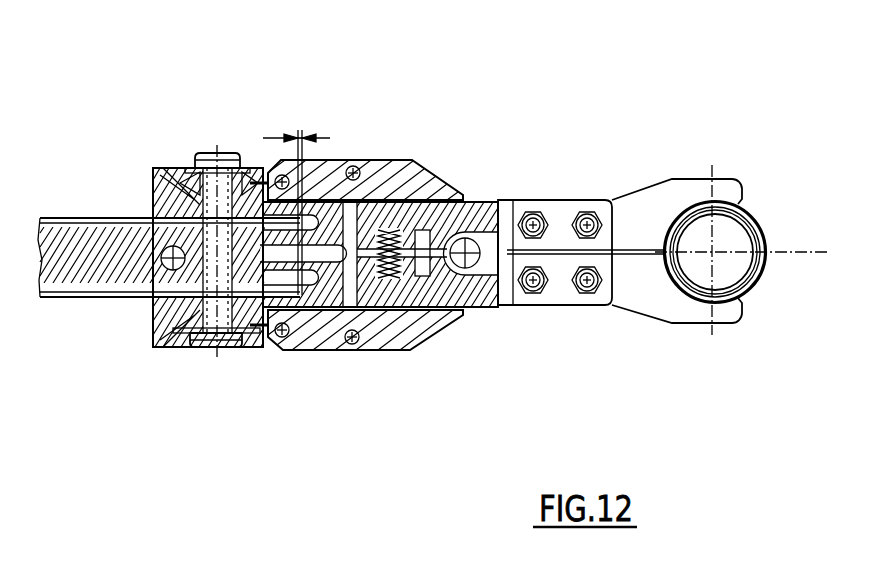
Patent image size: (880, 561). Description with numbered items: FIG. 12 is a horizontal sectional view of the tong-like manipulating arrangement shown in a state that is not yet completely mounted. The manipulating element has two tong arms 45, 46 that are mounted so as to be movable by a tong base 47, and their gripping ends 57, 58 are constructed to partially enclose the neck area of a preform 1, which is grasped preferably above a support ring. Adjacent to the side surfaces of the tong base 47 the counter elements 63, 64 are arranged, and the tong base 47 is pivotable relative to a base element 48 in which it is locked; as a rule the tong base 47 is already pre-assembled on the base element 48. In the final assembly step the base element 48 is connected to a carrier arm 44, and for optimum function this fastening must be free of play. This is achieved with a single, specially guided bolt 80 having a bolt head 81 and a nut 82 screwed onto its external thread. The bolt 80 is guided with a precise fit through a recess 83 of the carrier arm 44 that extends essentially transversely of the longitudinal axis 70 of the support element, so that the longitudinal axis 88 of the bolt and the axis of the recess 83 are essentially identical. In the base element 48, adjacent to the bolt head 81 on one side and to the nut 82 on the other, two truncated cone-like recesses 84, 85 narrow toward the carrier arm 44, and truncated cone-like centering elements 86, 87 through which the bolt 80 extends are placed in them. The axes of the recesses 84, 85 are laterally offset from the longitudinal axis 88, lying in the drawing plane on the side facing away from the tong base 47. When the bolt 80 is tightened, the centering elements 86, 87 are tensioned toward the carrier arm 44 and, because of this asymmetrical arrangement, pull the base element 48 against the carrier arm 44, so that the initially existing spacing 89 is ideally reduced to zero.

The preform 1 is at (766, 218).
The carrier arm 44 is at (85, 298).
The tong arm 45 is at (637, 296).
The tong arm 46 is at (628, 207).
The tong base 47 is at (503, 307).
The base element 48 is at (252, 347).
The gripping end 57 is at (725, 312).
The gripping end 58 is at (725, 187).
The counter element 63 is at (388, 347).
The counter element 64 is at (407, 160).
The longitudinal axis 70 is at (822, 255).
The bolt 80 is at (200, 353).
The bolt head 81 is at (192, 355).
The nut 82 is at (212, 165).
The recess 83 is at (228, 168).
The truncated cone-like recess 84 is at (217, 256).
The truncated cone-like recess 85 is at (155, 193).
The centering element 86 is at (232, 340).
The centering element 87 is at (183, 183).
The longitudinal axis of the bolt 88 is at (168, 270).
The spacing 89 is at (272, 137).